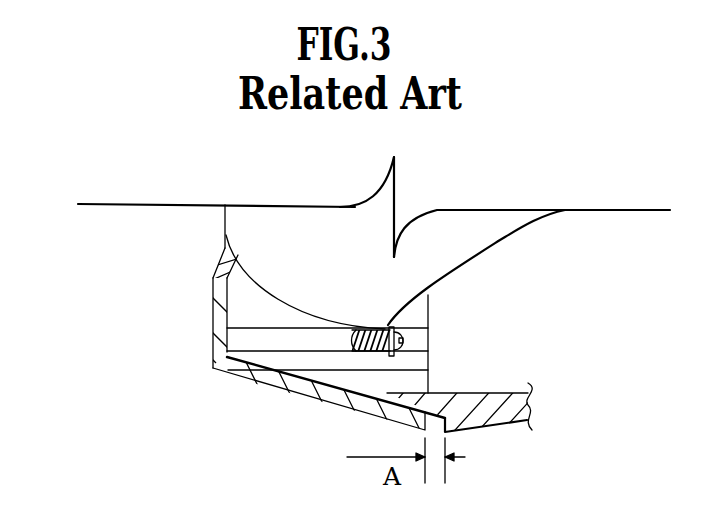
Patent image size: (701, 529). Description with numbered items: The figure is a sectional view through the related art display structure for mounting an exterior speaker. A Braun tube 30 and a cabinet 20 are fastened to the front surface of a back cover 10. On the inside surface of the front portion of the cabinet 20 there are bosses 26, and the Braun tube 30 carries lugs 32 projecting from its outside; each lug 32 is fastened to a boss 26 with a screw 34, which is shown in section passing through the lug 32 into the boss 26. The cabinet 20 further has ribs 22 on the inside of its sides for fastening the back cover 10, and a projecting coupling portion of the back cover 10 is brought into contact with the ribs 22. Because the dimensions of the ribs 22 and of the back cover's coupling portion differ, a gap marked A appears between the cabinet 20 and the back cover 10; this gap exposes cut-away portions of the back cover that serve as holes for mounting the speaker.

The back cover 10 is at (498, 416).
The cabinet 20 is at (218, 358).
The rib 22 is at (338, 378).
The boss 26 is at (234, 336).
The Braun tube 30 is at (240, 233).
The lug 32 is at (388, 325).
The screw 34 is at (403, 341).